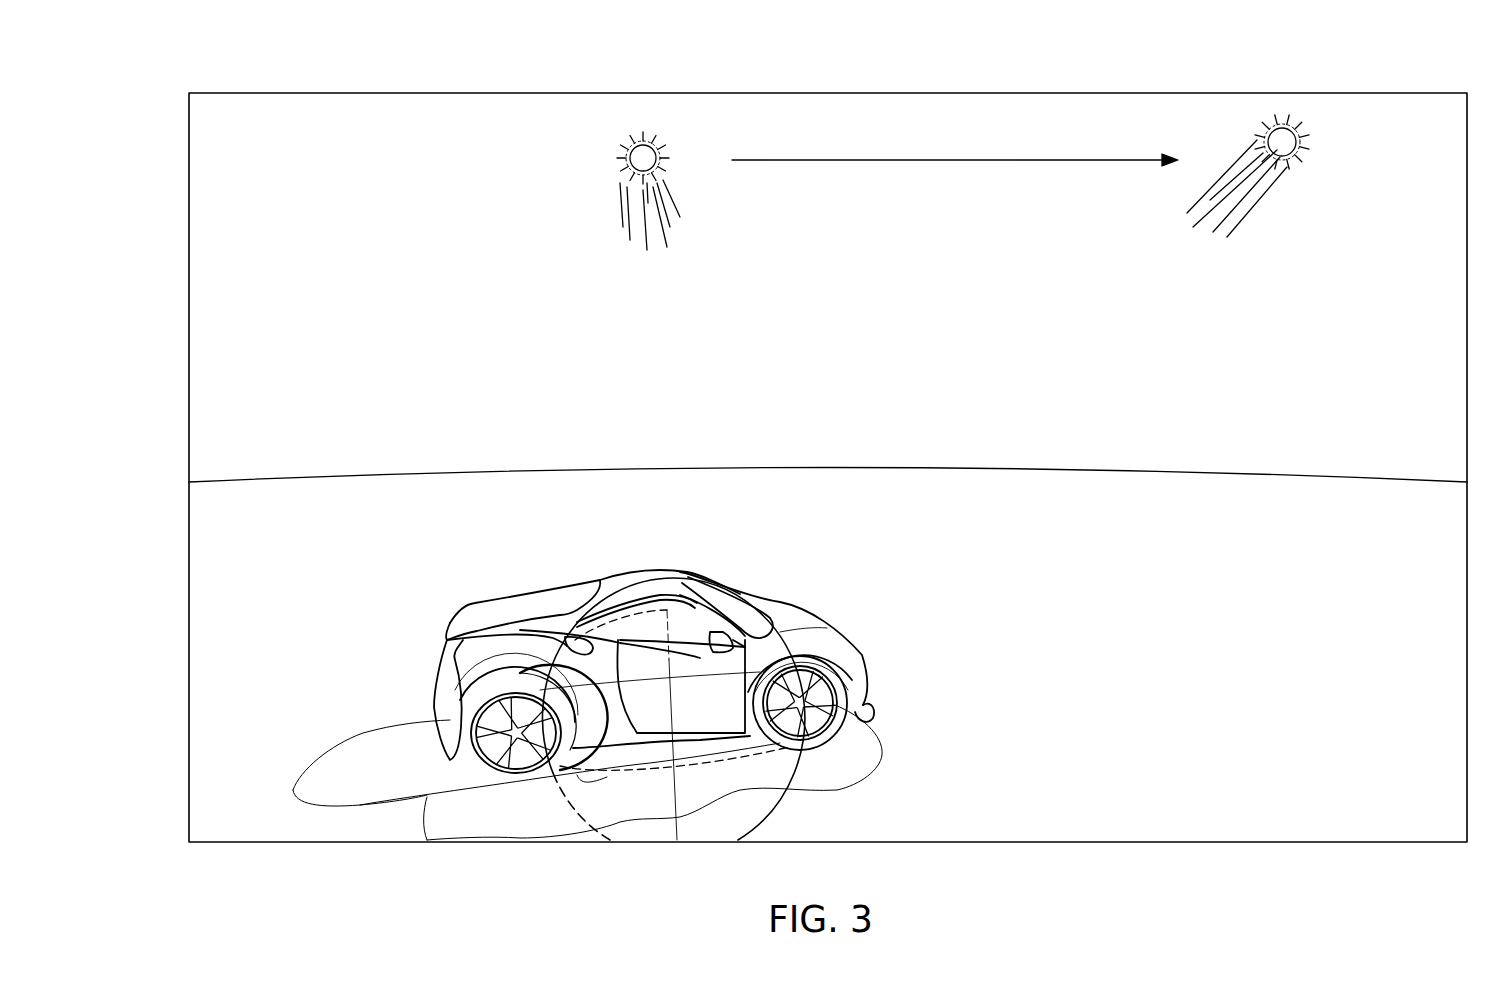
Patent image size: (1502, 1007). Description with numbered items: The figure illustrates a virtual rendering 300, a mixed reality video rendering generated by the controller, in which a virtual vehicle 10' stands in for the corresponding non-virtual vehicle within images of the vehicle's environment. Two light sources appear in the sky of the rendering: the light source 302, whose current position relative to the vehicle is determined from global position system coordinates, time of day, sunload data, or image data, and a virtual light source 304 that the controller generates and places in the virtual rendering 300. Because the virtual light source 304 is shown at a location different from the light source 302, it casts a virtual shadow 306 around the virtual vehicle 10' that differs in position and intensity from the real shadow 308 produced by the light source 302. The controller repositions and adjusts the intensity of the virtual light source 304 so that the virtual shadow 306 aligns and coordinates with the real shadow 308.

The virtual rendering 300 is at (158, 110).
The light source 302 is at (1222, 123).
The virtual light source 304 is at (625, 122).
The virtual shadow 306 is at (660, 759).
The real shadow 308 is at (312, 755).
The virtual vehicle 10' is at (654, 631).